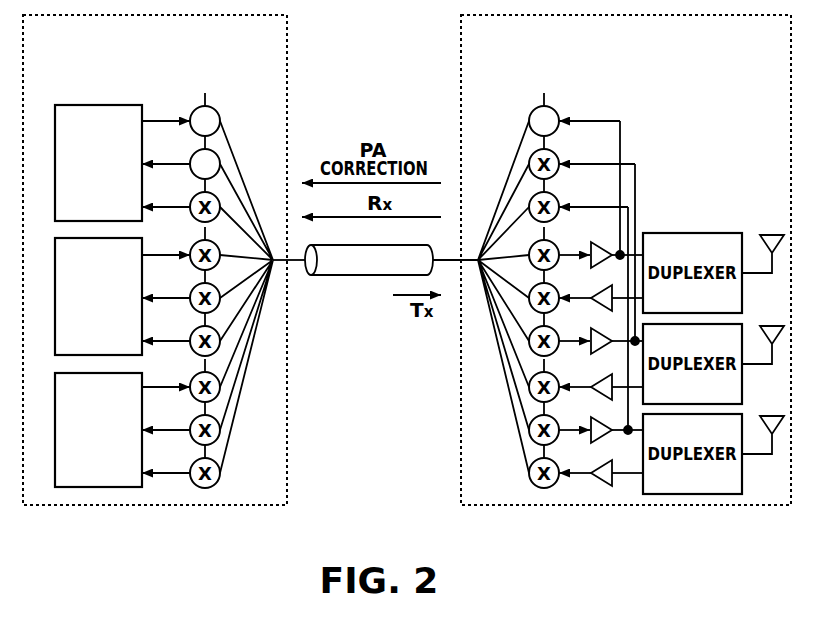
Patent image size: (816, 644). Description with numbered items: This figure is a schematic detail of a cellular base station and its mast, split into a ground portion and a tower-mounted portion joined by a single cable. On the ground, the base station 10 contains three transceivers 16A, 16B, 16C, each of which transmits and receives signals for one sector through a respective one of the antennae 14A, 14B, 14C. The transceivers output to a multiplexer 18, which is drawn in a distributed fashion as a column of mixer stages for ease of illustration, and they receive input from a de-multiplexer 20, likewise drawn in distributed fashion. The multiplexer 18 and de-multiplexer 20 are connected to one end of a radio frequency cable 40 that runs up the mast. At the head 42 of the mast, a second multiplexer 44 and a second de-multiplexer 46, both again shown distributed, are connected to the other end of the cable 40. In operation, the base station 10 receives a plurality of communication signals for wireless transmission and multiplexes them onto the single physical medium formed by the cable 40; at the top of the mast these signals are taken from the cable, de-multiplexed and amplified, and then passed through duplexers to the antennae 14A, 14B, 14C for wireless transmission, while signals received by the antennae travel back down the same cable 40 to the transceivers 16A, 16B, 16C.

The base station 10 is at (146, 63).
The transceiver 16A is at (117, 183).
The transceiver 16B is at (117, 316).
The transceiver 16C is at (117, 450).
The multiplexer 18 is at (198, 108).
The de-multiplexer 20 is at (197, 151).
The radio frequency cable 40 is at (344, 268).
The head of the mast 42 is at (618, 63).
The multiplexer 44 is at (536, 108).
The de-multiplexer 46 is at (553, 243).
The radio frequency antenna 14A is at (771, 233).
The radio frequency antenna 14B is at (771, 325).
The radio frequency antenna 14C is at (771, 415).